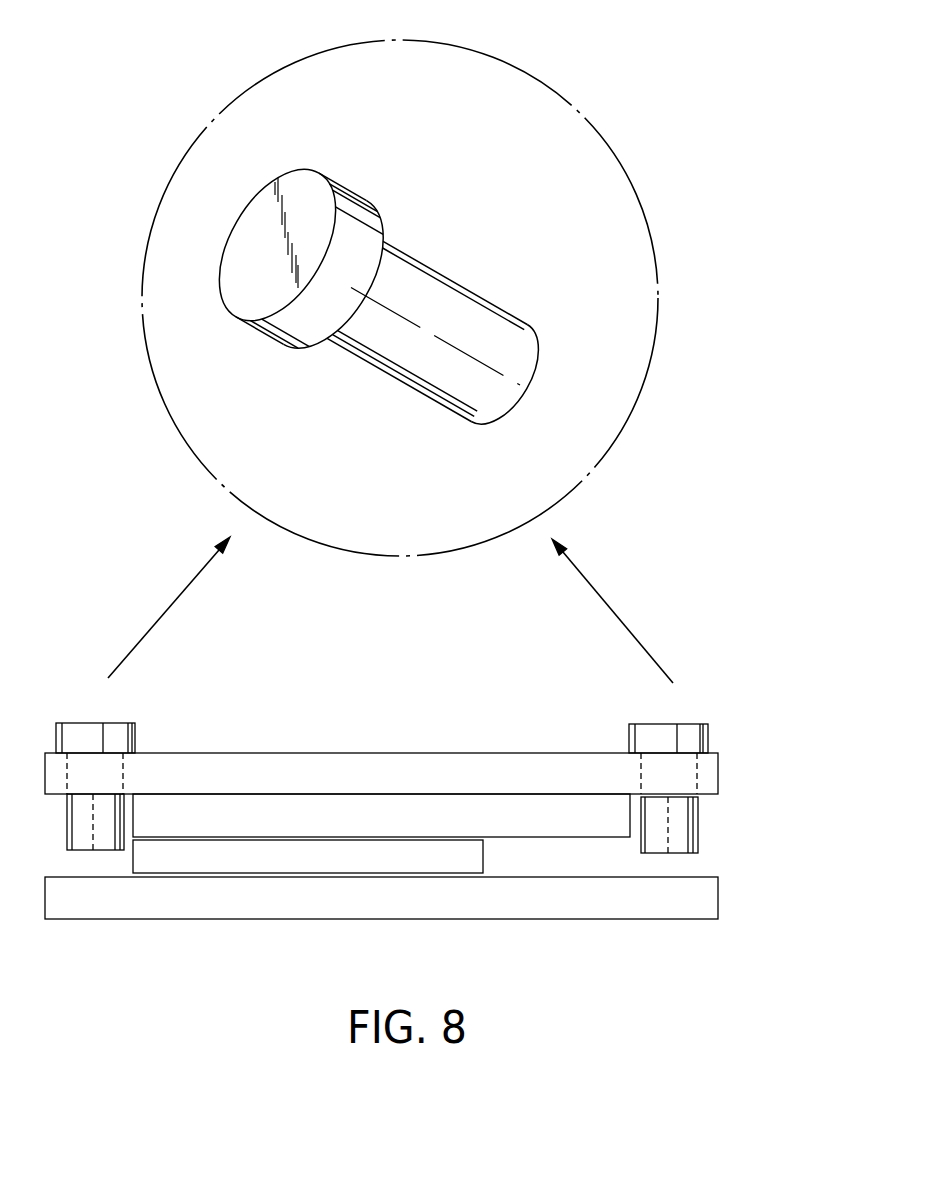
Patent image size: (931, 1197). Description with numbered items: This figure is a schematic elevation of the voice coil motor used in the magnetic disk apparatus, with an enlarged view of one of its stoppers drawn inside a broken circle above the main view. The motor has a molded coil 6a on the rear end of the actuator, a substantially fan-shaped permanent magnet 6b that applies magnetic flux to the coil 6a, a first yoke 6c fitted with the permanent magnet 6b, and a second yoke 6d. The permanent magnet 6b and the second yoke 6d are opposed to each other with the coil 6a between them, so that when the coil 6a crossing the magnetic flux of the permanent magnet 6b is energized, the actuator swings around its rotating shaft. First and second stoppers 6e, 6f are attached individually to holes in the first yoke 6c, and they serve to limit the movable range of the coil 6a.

The molded coil 6a is at (193, 863).
The permanent magnet 6b is at (633, 813).
The first yoke 6c is at (720, 772).
The second yoke 6d is at (720, 896).
The first stopper 6e is at (135, 734).
The second stopper 6f is at (710, 734).